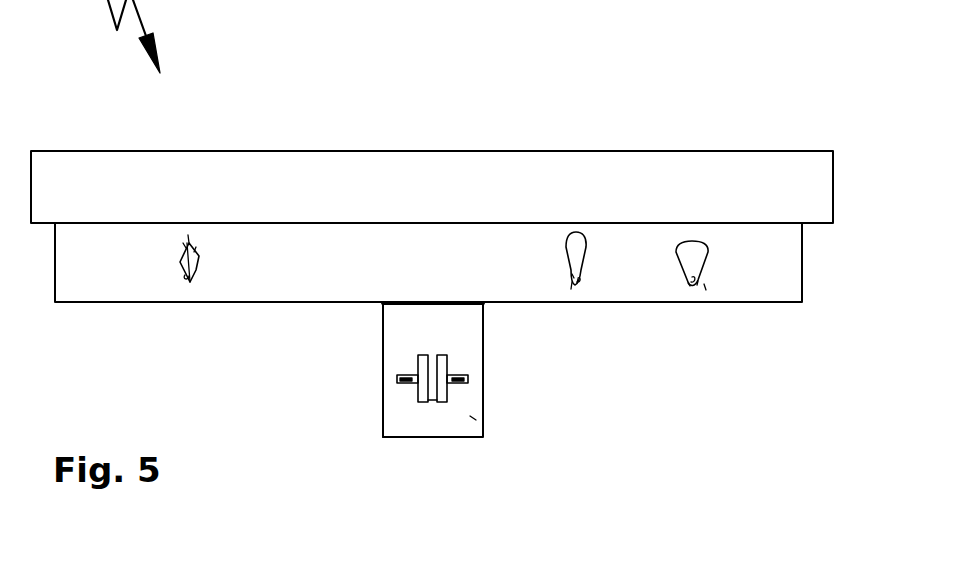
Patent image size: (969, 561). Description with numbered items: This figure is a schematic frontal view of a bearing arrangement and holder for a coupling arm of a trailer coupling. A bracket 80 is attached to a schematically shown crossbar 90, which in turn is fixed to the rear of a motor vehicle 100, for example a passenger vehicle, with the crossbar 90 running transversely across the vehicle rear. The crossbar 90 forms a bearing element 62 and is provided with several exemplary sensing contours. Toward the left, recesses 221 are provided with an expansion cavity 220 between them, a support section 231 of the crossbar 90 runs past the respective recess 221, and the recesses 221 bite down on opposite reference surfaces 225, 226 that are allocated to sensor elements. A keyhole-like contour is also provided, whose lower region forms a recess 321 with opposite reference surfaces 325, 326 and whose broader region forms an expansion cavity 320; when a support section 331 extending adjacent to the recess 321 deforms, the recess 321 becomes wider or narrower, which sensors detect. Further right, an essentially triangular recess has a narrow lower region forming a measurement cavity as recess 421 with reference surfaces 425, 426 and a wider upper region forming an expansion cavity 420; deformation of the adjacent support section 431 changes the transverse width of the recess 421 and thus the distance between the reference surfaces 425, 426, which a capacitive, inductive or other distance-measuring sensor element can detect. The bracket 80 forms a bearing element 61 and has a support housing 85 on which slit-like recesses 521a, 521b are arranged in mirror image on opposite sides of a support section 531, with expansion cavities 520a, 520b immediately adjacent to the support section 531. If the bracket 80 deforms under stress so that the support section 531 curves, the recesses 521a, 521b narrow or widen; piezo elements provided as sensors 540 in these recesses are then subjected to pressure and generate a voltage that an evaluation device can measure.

The motor vehicle 100 is at (454, 137).
The crossbar 90 is at (778, 318).
The bracket 80 is at (493, 447).
The support housing 85 is at (388, 428).
The bearing element 61 is at (473, 418).
The bearing element 62 is at (317, 290).
The expansion cavity 220 is at (193, 259).
The recess 221 is at (189, 243).
The reference surface 225 is at (183, 243).
The reference surface 226 is at (196, 247).
The support section 231 is at (188, 235).
The expansion cavity 320 is at (580, 240).
The recess 321 is at (578, 290).
The reference surface 325 is at (572, 274).
The reference surface 326 is at (578, 279).
The support section 331 is at (571, 289).
The expansion cavity 420 is at (696, 256).
The recess 421 is at (695, 287).
The reference surface 425 is at (688, 283).
The reference surface 426 is at (698, 281).
The support section 431 is at (706, 290).
The expansion cavity 520a is at (423, 362).
The expansion cavity 520b is at (442, 403).
The recess 521a is at (397, 379).
The recess 521b is at (468, 379).
The support section 531 is at (432, 403).
The sensor 540 is at (408, 373).